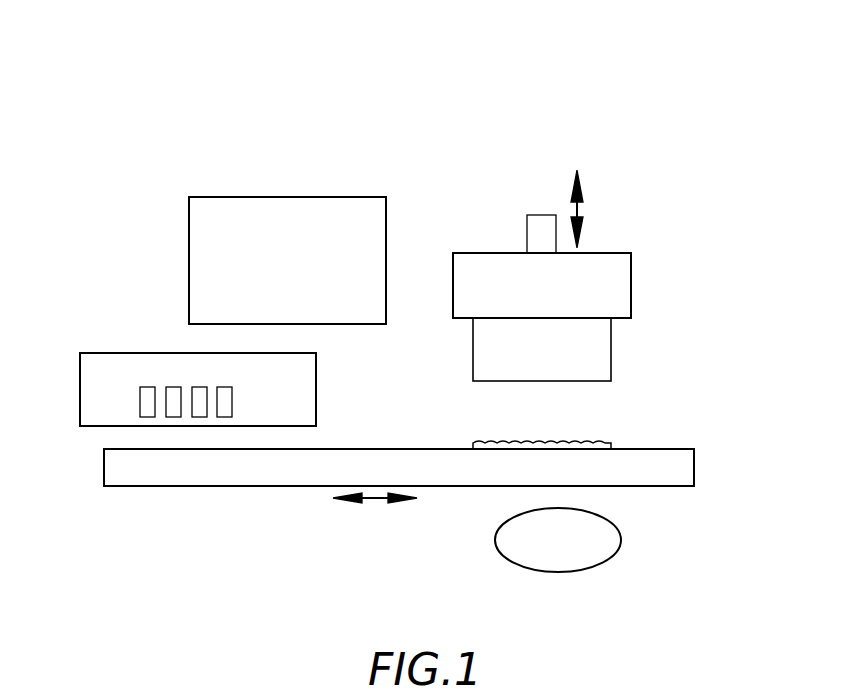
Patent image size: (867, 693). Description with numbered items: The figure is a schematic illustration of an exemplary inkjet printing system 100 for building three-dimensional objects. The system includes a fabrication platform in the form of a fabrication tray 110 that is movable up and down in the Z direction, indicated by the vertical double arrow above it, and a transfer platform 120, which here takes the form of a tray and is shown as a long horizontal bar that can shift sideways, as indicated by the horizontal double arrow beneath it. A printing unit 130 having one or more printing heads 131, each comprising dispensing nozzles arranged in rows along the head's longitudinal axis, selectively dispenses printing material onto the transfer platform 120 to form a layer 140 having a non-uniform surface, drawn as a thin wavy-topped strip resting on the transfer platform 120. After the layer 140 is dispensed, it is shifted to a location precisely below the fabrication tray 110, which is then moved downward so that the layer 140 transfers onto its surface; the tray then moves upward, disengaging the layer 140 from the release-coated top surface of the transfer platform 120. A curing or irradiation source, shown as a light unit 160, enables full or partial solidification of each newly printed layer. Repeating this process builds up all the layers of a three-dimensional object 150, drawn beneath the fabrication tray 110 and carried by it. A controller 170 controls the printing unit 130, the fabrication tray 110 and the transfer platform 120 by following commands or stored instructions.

The printing system 100 is at (198, 68).
The fabrication platform 110 is at (631, 279).
The transfer platform 120 is at (694, 467).
The printing unit 130 is at (167, 364).
The printing heads 131 is at (140, 404).
The layer 140 is at (612, 446).
The three-dimensional object 150 is at (611, 350).
The curing or irradiation source 160 is at (622, 540).
The controller 170 is at (256, 197).